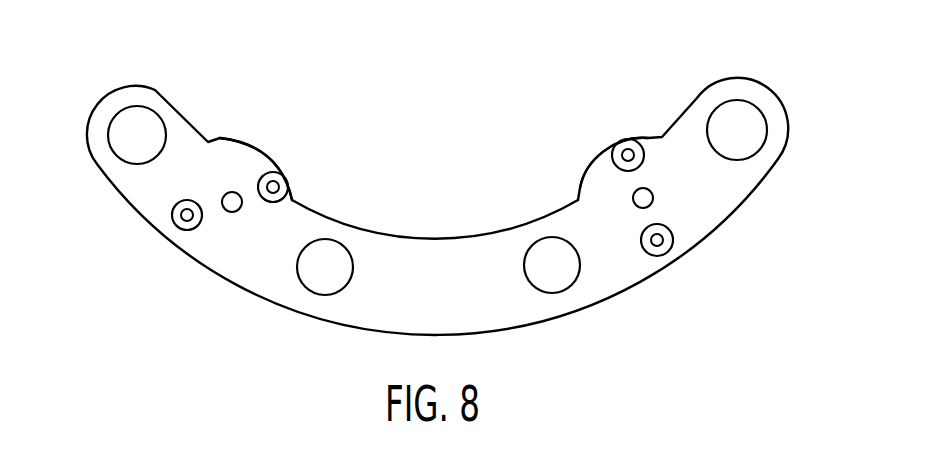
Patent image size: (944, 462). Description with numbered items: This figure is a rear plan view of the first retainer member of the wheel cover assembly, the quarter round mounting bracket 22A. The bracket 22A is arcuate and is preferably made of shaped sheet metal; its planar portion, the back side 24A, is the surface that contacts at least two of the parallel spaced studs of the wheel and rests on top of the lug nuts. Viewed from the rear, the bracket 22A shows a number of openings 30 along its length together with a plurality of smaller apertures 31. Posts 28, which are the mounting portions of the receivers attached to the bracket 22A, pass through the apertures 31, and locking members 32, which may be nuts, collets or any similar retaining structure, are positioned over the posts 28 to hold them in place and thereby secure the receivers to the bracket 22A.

The mounting bracket 22A is at (446, 226).
The back side 24A is at (447, 241).
The posts 28 is at (187, 218).
The large mounting hole 30 is at (140, 142).
The apertures 31 is at (234, 200).
The locking members 32 is at (173, 210).